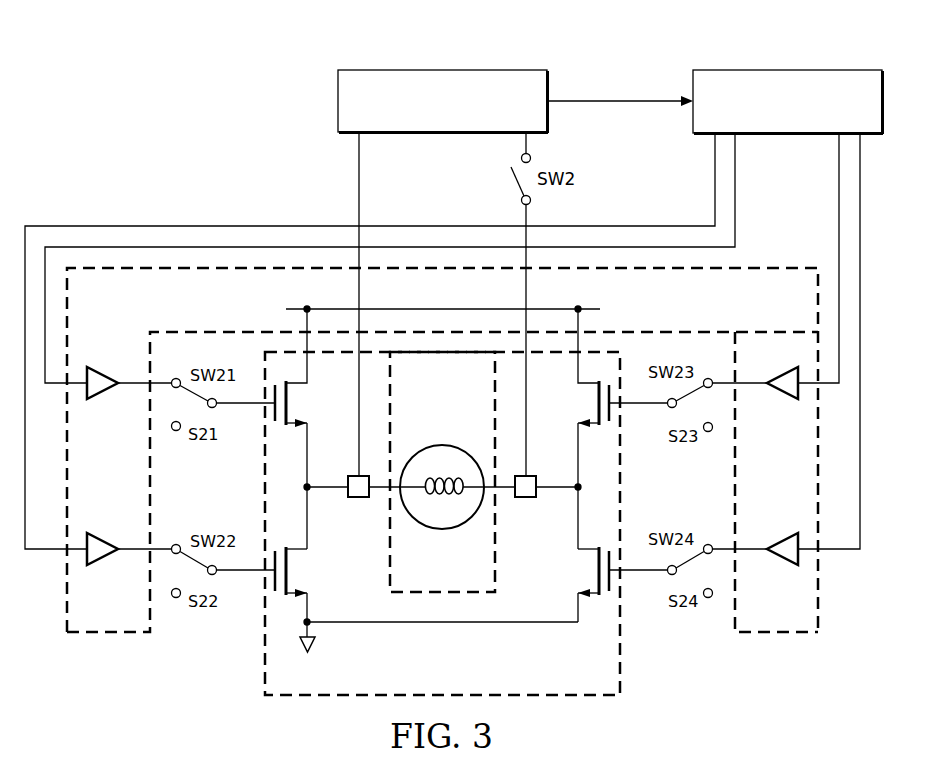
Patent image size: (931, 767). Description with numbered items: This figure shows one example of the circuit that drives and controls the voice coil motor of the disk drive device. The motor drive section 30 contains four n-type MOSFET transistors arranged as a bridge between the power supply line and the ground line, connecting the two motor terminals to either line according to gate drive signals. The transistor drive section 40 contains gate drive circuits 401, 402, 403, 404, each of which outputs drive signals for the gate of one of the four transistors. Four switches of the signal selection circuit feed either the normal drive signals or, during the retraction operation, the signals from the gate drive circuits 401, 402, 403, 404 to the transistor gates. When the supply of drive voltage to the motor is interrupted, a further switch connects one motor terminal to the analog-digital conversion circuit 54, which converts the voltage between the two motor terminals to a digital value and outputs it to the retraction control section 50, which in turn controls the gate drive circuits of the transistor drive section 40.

The analog-digital conversion circuit 54 is at (338, 92).
The retraction control section 50 is at (787, 70).
The transistor drive section 40 is at (93, 638).
The motor drive section 30 is at (628, 661).
The gate drive circuit 401 is at (120, 353).
The gate drive circuit 402 is at (99, 565).
The gate drive circuit 403 is at (786, 367).
The gate drive circuit 404 is at (786, 565).